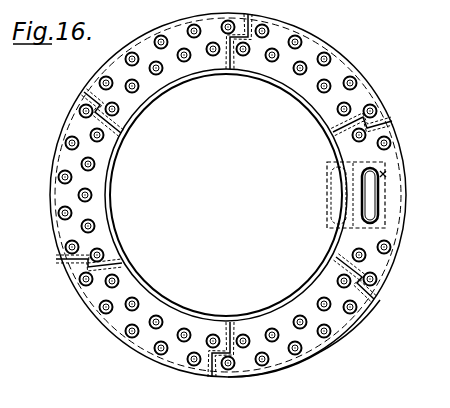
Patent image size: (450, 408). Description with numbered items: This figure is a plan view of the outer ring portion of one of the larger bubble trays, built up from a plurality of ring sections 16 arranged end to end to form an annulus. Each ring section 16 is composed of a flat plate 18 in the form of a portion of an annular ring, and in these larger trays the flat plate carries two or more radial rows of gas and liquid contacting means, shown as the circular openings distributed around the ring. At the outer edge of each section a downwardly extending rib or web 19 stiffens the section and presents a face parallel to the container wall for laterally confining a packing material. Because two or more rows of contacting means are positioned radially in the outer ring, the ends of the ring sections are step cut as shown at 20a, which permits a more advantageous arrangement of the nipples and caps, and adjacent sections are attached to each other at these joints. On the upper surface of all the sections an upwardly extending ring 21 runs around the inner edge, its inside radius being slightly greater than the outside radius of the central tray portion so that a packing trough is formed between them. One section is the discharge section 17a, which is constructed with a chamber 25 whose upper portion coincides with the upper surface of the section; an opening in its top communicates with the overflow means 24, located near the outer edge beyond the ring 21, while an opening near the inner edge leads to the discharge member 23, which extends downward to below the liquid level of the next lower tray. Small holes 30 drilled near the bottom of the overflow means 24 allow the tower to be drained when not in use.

The ring section 16 is at (350, 63).
The discharge section of the outer ring portion 17a is at (397, 152).
The flat plate 18 is at (287, 357).
The downwardly extending rib or web 19 is at (312, 357).
The step cut end of ring section 20a is at (365, 285).
The upwardly extending ring 21 is at (107, 211).
The discharge member 23 is at (327, 190).
The overflow means 24 is at (383, 221).
The chamber 25 is at (386, 172).
The small holes 30 is at (0, 194).